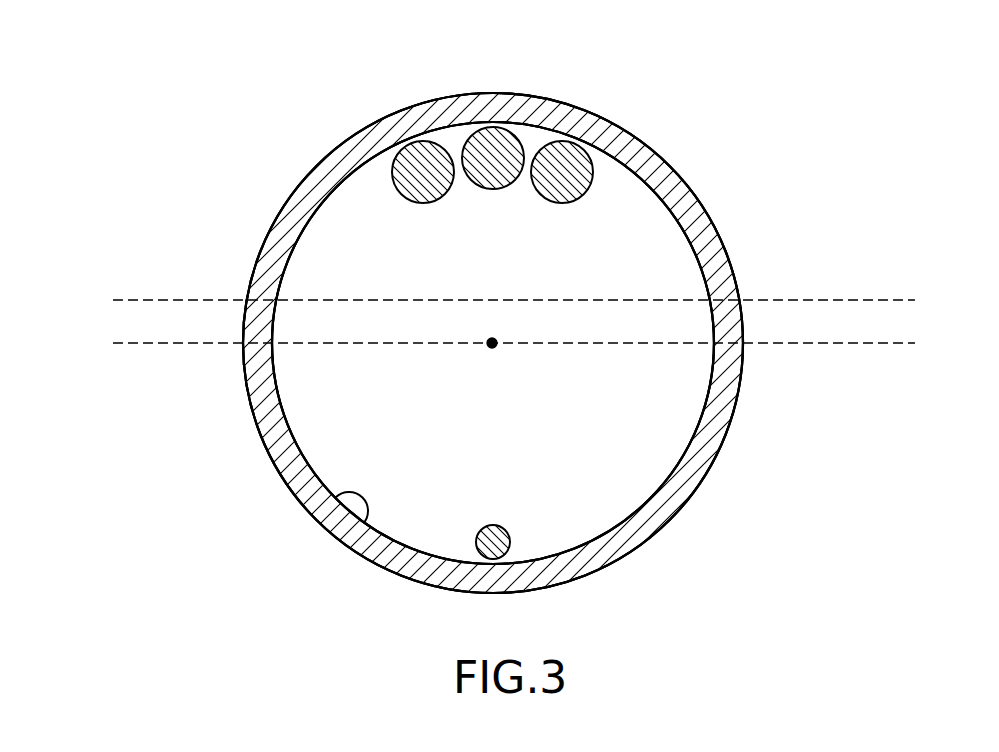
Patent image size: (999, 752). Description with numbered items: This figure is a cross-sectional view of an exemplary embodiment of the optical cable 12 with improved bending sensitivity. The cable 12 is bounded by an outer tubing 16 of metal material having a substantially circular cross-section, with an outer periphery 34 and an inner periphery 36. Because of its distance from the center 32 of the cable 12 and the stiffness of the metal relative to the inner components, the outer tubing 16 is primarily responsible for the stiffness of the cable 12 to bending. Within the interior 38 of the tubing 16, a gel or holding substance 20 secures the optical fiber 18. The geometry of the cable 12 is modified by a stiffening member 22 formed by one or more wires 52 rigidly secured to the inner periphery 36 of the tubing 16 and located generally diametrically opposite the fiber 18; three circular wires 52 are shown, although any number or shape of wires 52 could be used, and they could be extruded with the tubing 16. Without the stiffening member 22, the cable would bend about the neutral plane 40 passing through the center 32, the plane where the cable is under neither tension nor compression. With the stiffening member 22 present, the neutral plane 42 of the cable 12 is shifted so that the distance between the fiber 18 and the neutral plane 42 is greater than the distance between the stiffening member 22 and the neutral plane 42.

The optical cable 12 is at (228, 166).
The outer tubing 16 is at (290, 476).
The optical fiber 18 is at (520, 548).
The holding substance 20 is at (659, 430).
The stiffening member 22 is at (423, 155).
The center 32 is at (490, 348).
The outer periphery 34 is at (250, 402).
The inner periphery 36 is at (313, 515).
The interior 38 is at (518, 467).
The neutral plane 40 is at (905, 345).
The neutral plane 42 is at (905, 300).
The wires 52 is at (530, 189).